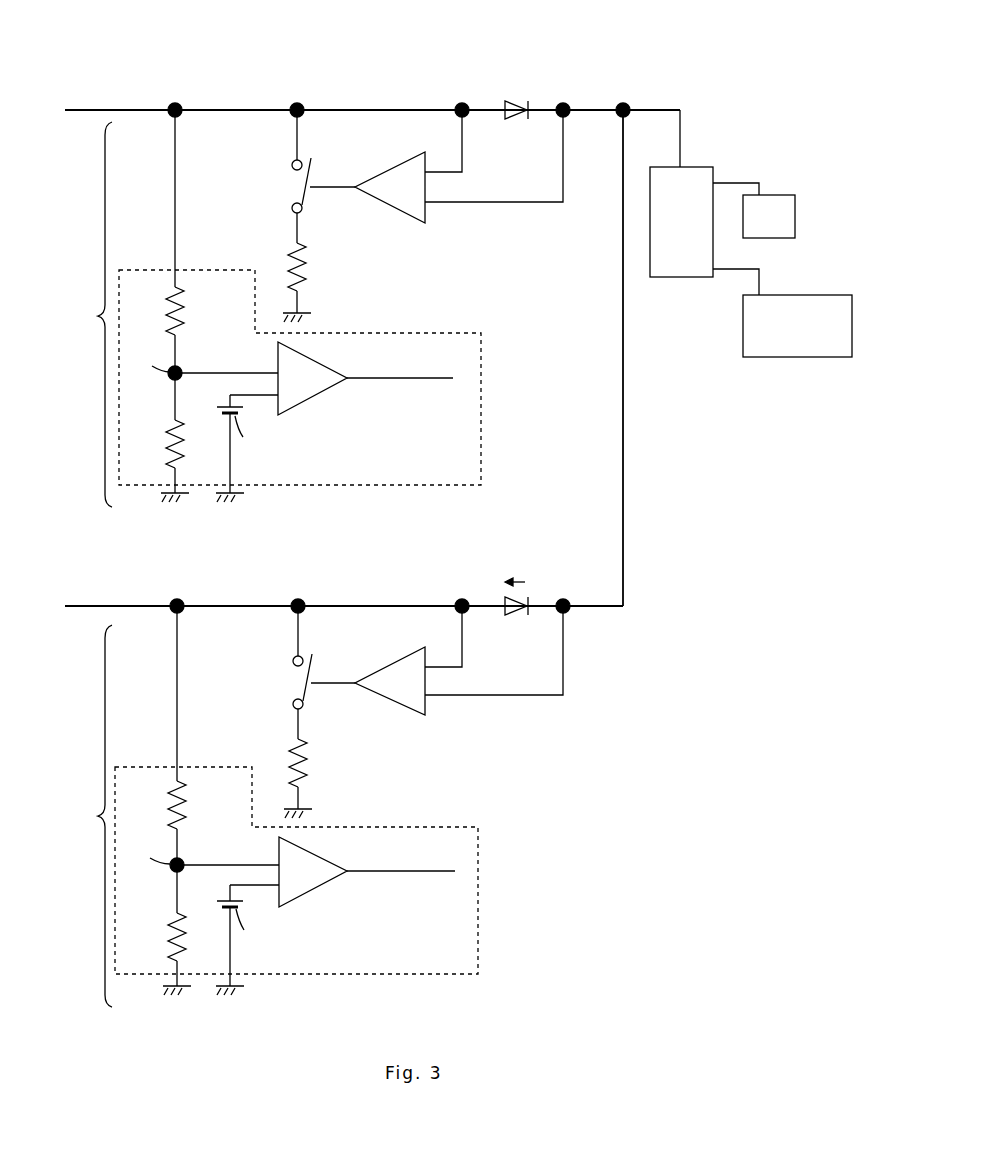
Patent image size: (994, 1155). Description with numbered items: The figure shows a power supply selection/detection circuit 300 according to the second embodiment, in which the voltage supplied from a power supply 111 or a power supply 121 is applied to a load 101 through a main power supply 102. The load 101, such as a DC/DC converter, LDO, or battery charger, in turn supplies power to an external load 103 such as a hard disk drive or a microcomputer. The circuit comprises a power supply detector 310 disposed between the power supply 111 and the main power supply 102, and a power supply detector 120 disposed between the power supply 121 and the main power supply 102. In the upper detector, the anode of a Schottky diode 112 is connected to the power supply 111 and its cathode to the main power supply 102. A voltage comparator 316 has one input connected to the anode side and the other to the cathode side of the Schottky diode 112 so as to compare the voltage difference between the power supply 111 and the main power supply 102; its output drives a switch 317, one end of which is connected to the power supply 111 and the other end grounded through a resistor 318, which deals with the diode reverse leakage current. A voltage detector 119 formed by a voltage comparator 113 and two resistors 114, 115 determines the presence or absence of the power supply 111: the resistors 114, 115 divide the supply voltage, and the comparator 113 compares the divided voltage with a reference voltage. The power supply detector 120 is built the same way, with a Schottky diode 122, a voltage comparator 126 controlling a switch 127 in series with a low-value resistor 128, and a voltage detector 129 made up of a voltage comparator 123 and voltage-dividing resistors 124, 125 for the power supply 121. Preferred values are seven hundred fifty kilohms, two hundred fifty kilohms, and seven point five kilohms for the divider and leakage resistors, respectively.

The power supply selection/detection circuit 300 is at (700, 38).
The power supply 111 is at (96, 109).
The Schottky diode 112 is at (500, 108).
The main power supply 102 is at (647, 110).
The load 101 is at (677, 278).
The external load 103 is at (770, 238).
The power supply detector 310 is at (88, 314).
The switch 317 is at (312, 162).
The resistor 318 is at (291, 255).
The voltage comparator 316 is at (412, 223).
The resistor 114 is at (167, 313).
The resistor 115 is at (167, 446).
The voltage comparator 113 is at (300, 412).
The voltage detector 119 is at (481, 425).
The power supply 121 is at (85, 605).
The Schottky diode 122 is at (500, 604).
The power supply detector 120 is at (88, 816).
The switch 127 is at (313, 658).
The resistor 128 is at (292, 751).
The voltage comparator 126 is at (412, 716).
The resistor 124 is at (167, 807).
The resistor 125 is at (167, 936).
The voltage comparator 123 is at (300, 904).
The voltage detector 129 is at (478, 918).